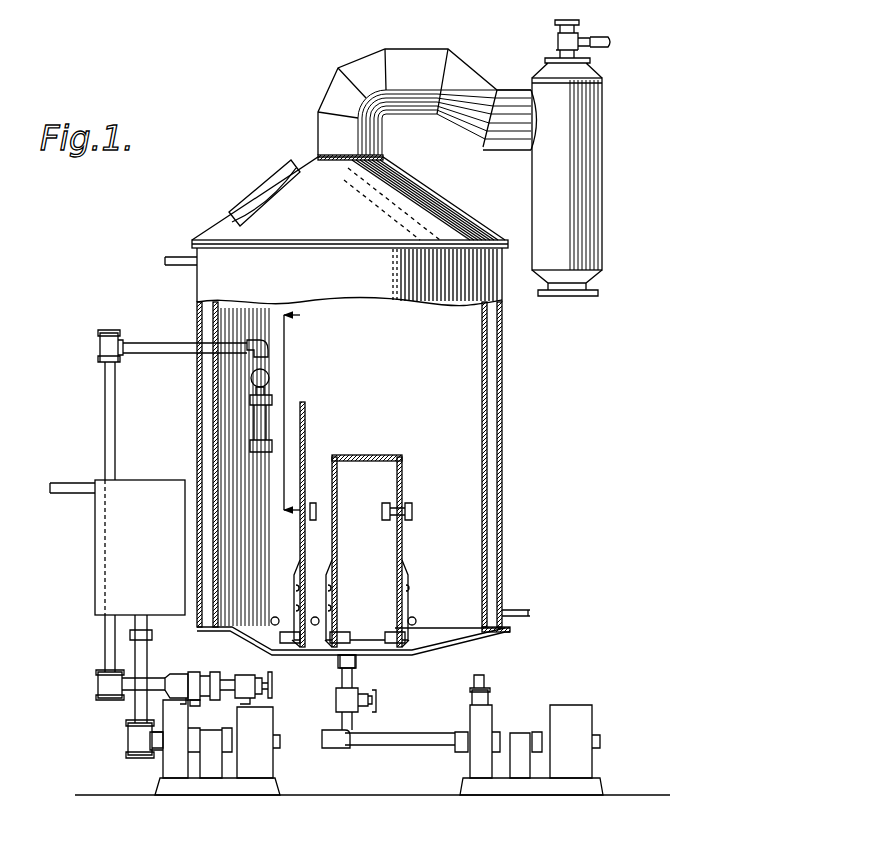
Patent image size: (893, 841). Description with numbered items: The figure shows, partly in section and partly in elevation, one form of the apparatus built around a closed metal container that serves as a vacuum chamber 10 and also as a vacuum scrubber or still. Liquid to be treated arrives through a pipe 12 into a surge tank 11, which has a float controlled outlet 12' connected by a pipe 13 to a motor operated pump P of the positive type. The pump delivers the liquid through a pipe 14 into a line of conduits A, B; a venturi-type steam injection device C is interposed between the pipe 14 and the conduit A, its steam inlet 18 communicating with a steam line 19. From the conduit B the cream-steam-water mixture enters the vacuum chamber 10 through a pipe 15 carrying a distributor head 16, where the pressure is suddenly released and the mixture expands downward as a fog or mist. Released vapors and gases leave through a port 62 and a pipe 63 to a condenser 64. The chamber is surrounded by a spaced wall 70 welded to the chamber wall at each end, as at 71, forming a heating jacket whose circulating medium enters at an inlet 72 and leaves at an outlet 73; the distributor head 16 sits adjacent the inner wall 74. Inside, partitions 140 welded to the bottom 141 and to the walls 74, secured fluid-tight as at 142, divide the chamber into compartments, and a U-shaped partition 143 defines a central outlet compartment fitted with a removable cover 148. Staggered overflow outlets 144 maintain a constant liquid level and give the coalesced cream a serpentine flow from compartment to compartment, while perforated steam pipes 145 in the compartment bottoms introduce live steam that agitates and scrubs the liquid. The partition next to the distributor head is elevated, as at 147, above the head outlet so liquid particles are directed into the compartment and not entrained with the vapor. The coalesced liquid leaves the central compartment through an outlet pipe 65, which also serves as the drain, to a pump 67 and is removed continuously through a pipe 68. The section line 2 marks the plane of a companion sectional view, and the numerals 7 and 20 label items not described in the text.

The section line 2- 2 is at (292, 420).
The supply pipe 7 is at (160, 340).
The vacuum chamber 10 is at (463, 393).
The surge tank 11 is at (160, 560).
The pipe 12 is at (67, 504).
The float controlled outlet 12' is at (151, 686).
The pipe 13 is at (142, 675).
The pipe 14 is at (185, 700).
The pipe 15 is at (268, 350).
The distributor head 16 is at (258, 427).
The steam inlet 18 is at (243, 680).
The steam line 19 is at (245, 698).
The elbow 20 is at (170, 695).
The port 62 is at (412, 200).
The pipe 63 is at (421, 85).
The condenser 64 is at (568, 172).
The outlet pipe 65 is at (352, 684).
The pump 67 is at (484, 710).
The pipe 68 is at (408, 738).
The spaced wall 70 is at (500, 477).
The weld 71 is at (508, 633).
The inlet 72 is at (520, 612).
The outlet 73 is at (175, 255).
The inner wall 74 is at (487, 496).
The partitions 140 is at (337, 496).
The bottom 141 is at (437, 640).
The fluid-tight securement 142 is at (345, 657).
The U-shaped partition 143 is at (405, 470).
The overflow outlets 144 is at (415, 511).
The perforated steam pipe 145 is at (415, 617).
The elevated portion 147 is at (305, 422).
The removable cover 148 is at (355, 455).
The conduit A is at (103, 645).
The conduit B is at (127, 334).
The steam injection device C is at (183, 672).
The motor operated pump P is at (175, 755).